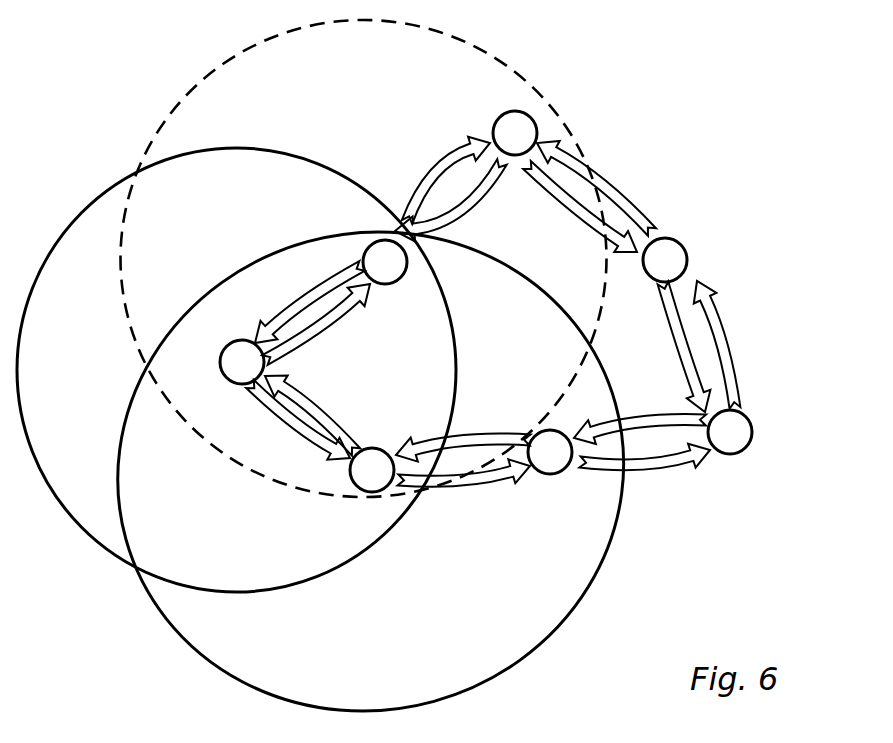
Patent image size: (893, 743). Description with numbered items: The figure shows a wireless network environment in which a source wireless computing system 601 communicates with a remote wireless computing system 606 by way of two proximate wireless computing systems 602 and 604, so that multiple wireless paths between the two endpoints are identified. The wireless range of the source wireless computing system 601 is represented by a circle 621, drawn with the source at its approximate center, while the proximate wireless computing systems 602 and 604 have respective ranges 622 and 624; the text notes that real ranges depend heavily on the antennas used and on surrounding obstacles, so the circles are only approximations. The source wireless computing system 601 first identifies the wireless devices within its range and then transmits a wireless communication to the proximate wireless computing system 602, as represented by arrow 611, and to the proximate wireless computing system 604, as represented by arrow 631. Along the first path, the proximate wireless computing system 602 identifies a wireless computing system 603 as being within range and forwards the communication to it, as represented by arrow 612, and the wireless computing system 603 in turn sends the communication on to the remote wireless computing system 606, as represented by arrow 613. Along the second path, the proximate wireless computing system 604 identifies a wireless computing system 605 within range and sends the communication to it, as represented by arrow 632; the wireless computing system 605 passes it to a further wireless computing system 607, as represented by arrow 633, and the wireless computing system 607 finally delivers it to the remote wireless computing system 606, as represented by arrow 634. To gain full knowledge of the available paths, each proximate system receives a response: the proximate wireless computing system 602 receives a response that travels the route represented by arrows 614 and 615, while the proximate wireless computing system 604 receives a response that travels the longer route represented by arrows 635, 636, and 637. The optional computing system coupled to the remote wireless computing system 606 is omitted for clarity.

The source wireless computing system 601 is at (242, 362).
The proximate wireless computing system 602 is at (372, 470).
The wireless computing system 603 is at (550, 452).
The proximate wireless computing system 604 is at (385, 262).
The wireless computing system 605 is at (515, 133).
The remote wireless computing system 606 is at (730, 432).
The wireless computing system 607 is at (665, 260).
The arrow 611 is at (273, 422).
The arrow 612 is at (480, 483).
The arrow 613 is at (645, 465).
The arrow 614 is at (630, 415).
The arrow 615 is at (480, 438).
The circle 621 is at (115, 557).
The range 622 is at (600, 573).
The range 624 is at (230, 57).
The arrow 631 is at (330, 335).
The arrow 632 is at (462, 215).
The arrow 633 is at (552, 197).
The arrow 634 is at (665, 355).
The arrow 635 is at (715, 322).
The arrow 636 is at (585, 152).
The arrow 637 is at (453, 167).